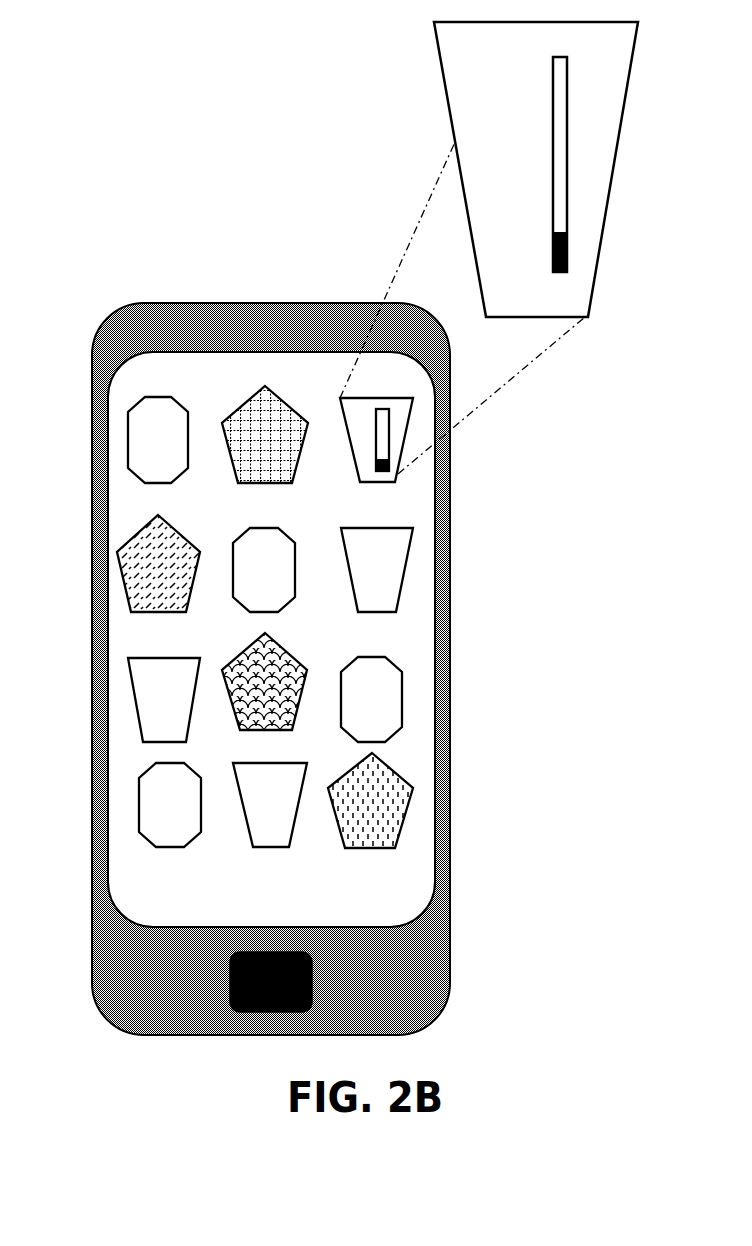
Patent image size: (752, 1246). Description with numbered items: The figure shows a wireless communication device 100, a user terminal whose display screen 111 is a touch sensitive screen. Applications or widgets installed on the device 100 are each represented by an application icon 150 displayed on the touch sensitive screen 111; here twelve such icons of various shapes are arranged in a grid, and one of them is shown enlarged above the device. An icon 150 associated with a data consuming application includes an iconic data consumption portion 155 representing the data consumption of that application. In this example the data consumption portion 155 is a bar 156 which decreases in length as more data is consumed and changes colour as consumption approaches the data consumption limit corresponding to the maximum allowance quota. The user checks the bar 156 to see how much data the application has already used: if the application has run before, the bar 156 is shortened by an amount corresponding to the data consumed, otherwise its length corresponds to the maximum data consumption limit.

The wireless communication device 100 is at (270, 242).
The display screen 111 is at (140, 741).
The application icon 150 is at (400, 777).
The data consumption portion 155 is at (567, 142).
The bar 156 is at (567, 252).